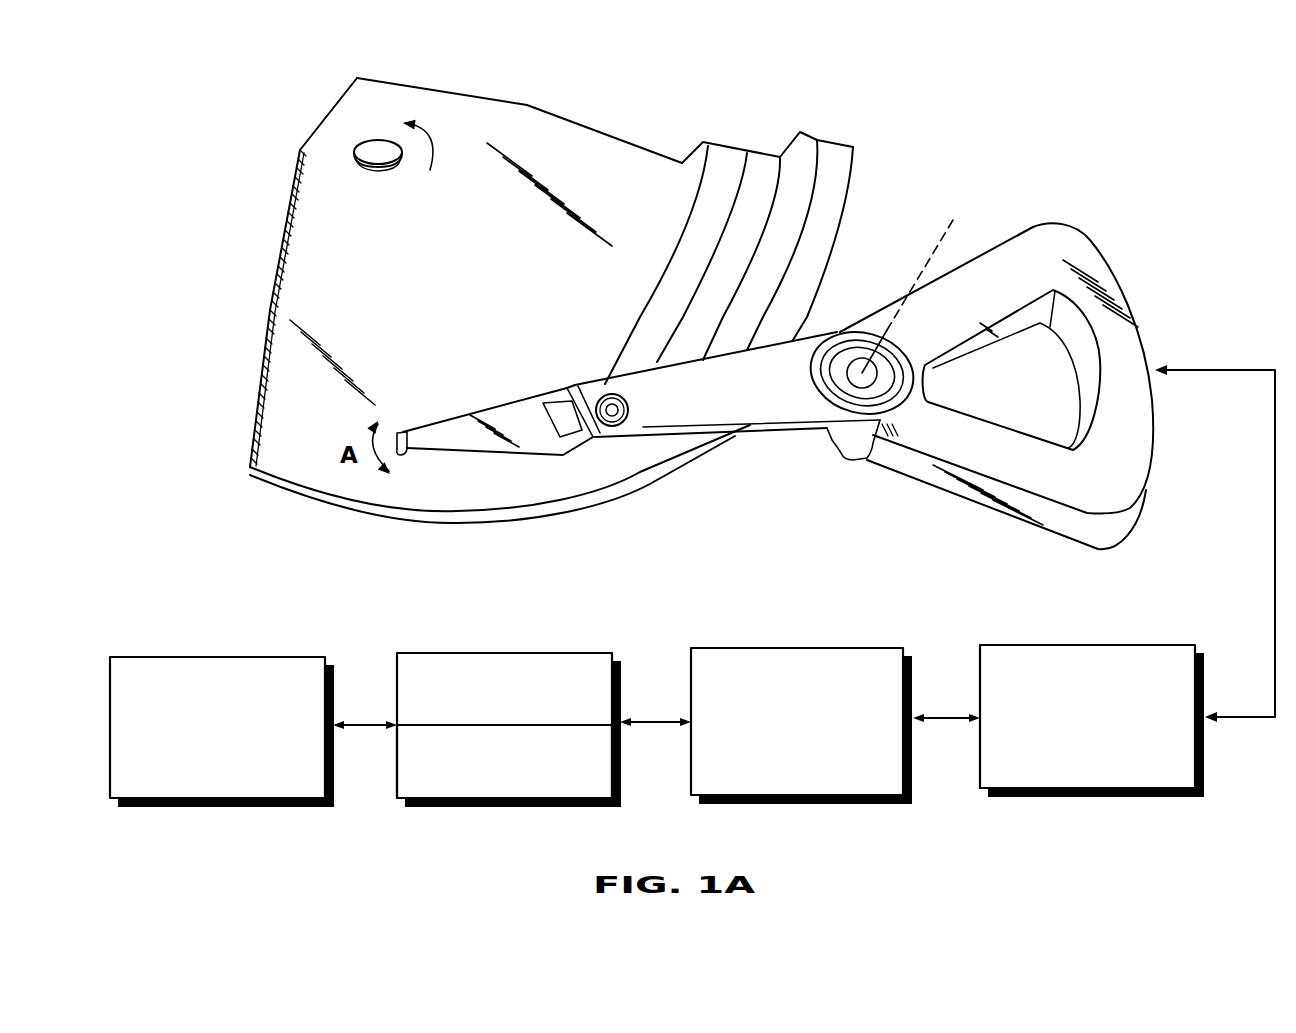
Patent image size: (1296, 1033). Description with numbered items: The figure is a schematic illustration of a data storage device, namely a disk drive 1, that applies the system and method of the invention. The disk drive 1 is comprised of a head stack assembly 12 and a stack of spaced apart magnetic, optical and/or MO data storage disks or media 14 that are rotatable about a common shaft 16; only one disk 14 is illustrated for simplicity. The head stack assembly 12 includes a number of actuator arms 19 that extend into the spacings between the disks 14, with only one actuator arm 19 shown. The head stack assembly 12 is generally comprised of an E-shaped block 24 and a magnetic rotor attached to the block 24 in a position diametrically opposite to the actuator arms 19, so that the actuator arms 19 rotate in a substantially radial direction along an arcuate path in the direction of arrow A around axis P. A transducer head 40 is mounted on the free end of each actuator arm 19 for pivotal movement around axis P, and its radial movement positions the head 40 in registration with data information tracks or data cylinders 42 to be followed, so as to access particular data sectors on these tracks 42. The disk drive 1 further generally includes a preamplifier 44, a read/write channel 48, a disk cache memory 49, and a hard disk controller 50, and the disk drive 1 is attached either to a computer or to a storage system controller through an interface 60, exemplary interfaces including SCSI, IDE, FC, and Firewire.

The disk drive 1 is at (918, 128).
The head stack assembly 12 is at (748, 432).
The data storage disks 14 is at (607, 132).
The common shaft 16 is at (363, 147).
The actuator arms 19 is at (770, 413).
The E-shaped block 24 is at (850, 447).
The transducer head 40 is at (425, 458).
The data information tracks 42 is at (813, 157).
The preamplifier 44 is at (1048, 643).
The read/write channel 48 is at (769, 647).
The disk cache memory 49 is at (483, 803).
The hard disk controller 50 is at (483, 652).
The interface 60 is at (184, 655).